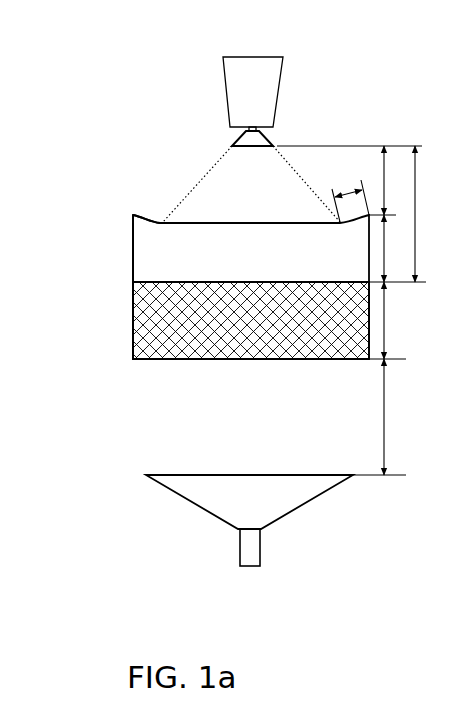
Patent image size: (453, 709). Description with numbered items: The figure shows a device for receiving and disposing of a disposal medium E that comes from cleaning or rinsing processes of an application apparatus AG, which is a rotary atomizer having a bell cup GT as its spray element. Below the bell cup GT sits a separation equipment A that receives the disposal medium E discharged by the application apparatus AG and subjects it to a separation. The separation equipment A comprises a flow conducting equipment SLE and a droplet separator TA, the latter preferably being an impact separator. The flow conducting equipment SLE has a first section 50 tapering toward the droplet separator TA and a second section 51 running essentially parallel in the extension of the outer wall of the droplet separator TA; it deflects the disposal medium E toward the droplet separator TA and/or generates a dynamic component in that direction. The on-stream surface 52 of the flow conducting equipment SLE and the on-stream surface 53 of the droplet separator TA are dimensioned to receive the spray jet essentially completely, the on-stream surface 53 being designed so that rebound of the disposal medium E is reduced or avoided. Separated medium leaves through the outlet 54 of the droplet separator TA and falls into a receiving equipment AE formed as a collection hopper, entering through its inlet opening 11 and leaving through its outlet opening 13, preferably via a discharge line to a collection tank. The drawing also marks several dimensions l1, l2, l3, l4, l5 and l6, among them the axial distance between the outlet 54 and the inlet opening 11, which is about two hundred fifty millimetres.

The application apparatus AG is at (227, 80).
The bell cup GT is at (273, 141).
The disposal medium E is at (218, 162).
The flow conducting equipment SLE is at (213, 222).
The first section 50 is at (133, 216).
The on-stream surface of the flow conducting equipment 52 is at (166, 213).
The second section 51 is at (133, 248).
The on-stream surface of the droplet separator 53 is at (133, 282).
The droplet separator TA is at (142, 331).
The outlet of the droplet separator 54 is at (145, 362).
The separation equipment A is at (108, 363).
The inlet opening 11 is at (185, 472).
The receiving equipment AE is at (150, 498).
The outlet opening 13 is at (241, 566).
The distance l1 is at (394, 180).
The distance l2 is at (394, 248).
The distance l3 is at (394, 320).
The distance l4 is at (394, 417).
The distance l5 is at (425, 214).
The distance l6 is at (350, 195).